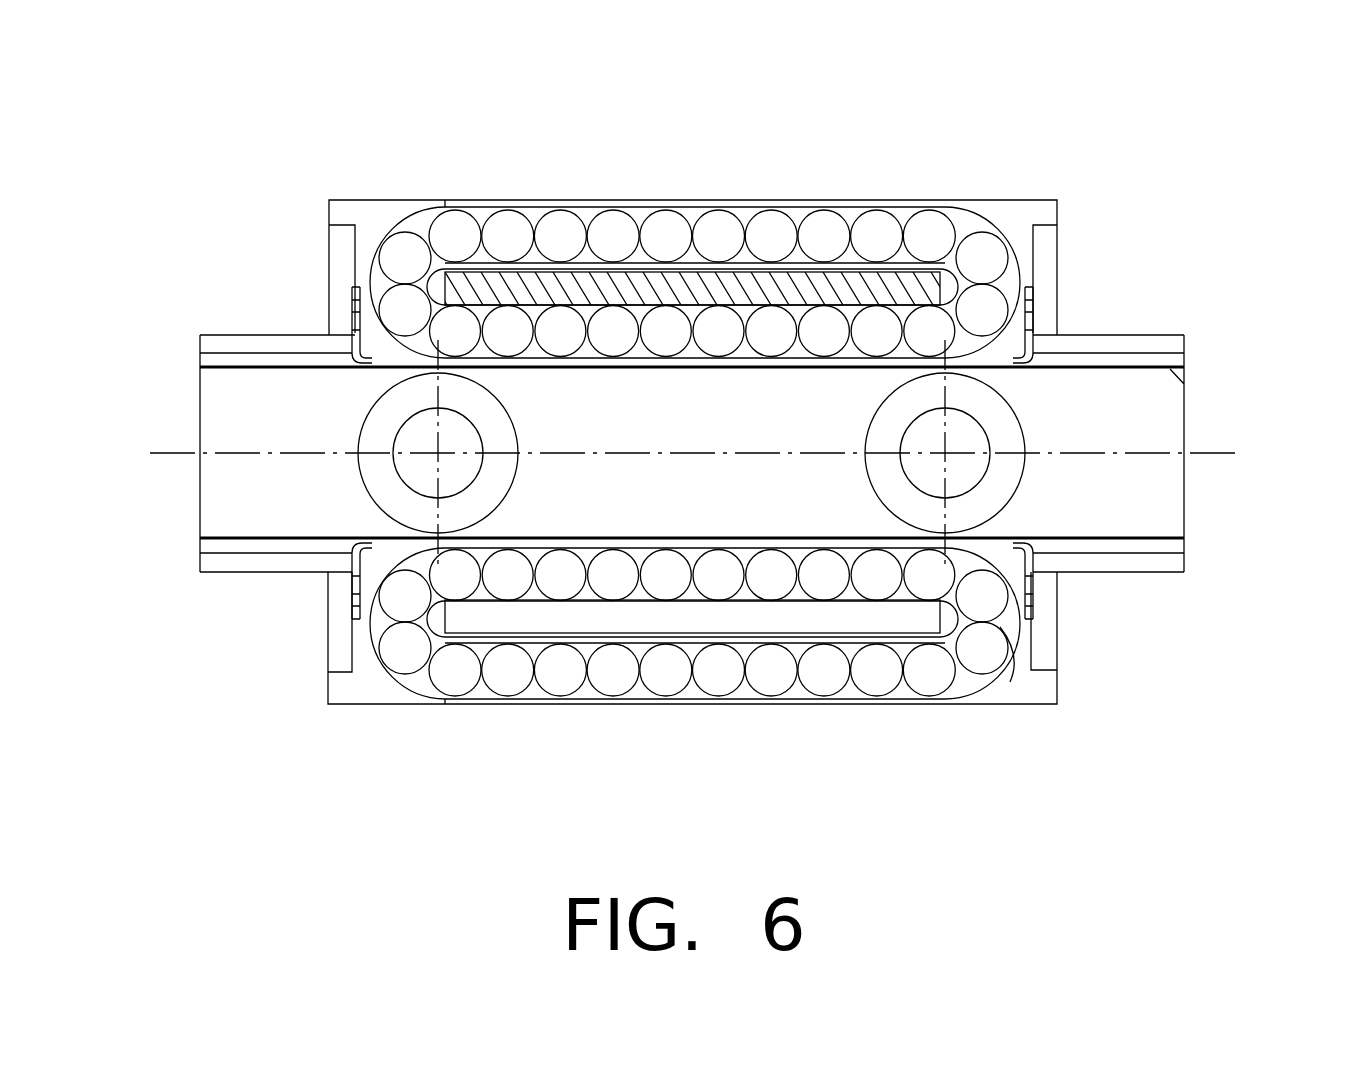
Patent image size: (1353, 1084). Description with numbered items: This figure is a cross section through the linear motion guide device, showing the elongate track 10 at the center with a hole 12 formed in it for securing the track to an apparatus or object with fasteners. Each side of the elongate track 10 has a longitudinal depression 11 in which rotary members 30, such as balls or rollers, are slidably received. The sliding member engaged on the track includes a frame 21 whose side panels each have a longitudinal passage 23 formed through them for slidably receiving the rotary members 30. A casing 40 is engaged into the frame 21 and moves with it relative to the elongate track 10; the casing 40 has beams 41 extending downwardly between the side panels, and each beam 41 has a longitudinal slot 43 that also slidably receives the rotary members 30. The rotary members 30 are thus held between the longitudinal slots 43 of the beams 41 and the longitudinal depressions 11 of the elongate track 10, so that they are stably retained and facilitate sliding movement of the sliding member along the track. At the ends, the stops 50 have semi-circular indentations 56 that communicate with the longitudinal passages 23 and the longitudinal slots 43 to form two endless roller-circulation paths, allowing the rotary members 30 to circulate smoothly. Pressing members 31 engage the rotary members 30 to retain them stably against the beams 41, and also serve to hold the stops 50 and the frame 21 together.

The elongate track 10 is at (1123, 428).
The longitudinal depression 11 is at (1112, 360).
The hole 12 is at (385, 420).
The frame 21 is at (663, 203).
The longitudinal passage 23 is at (525, 212).
The rotary members 30 is at (935, 675).
The pressing member 31 is at (393, 363).
The casing 40 is at (813, 262).
The beam 41 is at (712, 285).
The longitudinal slot 43 is at (860, 316).
The stop 50 is at (357, 218).
The semi-circular indentation 56 is at (1003, 667).